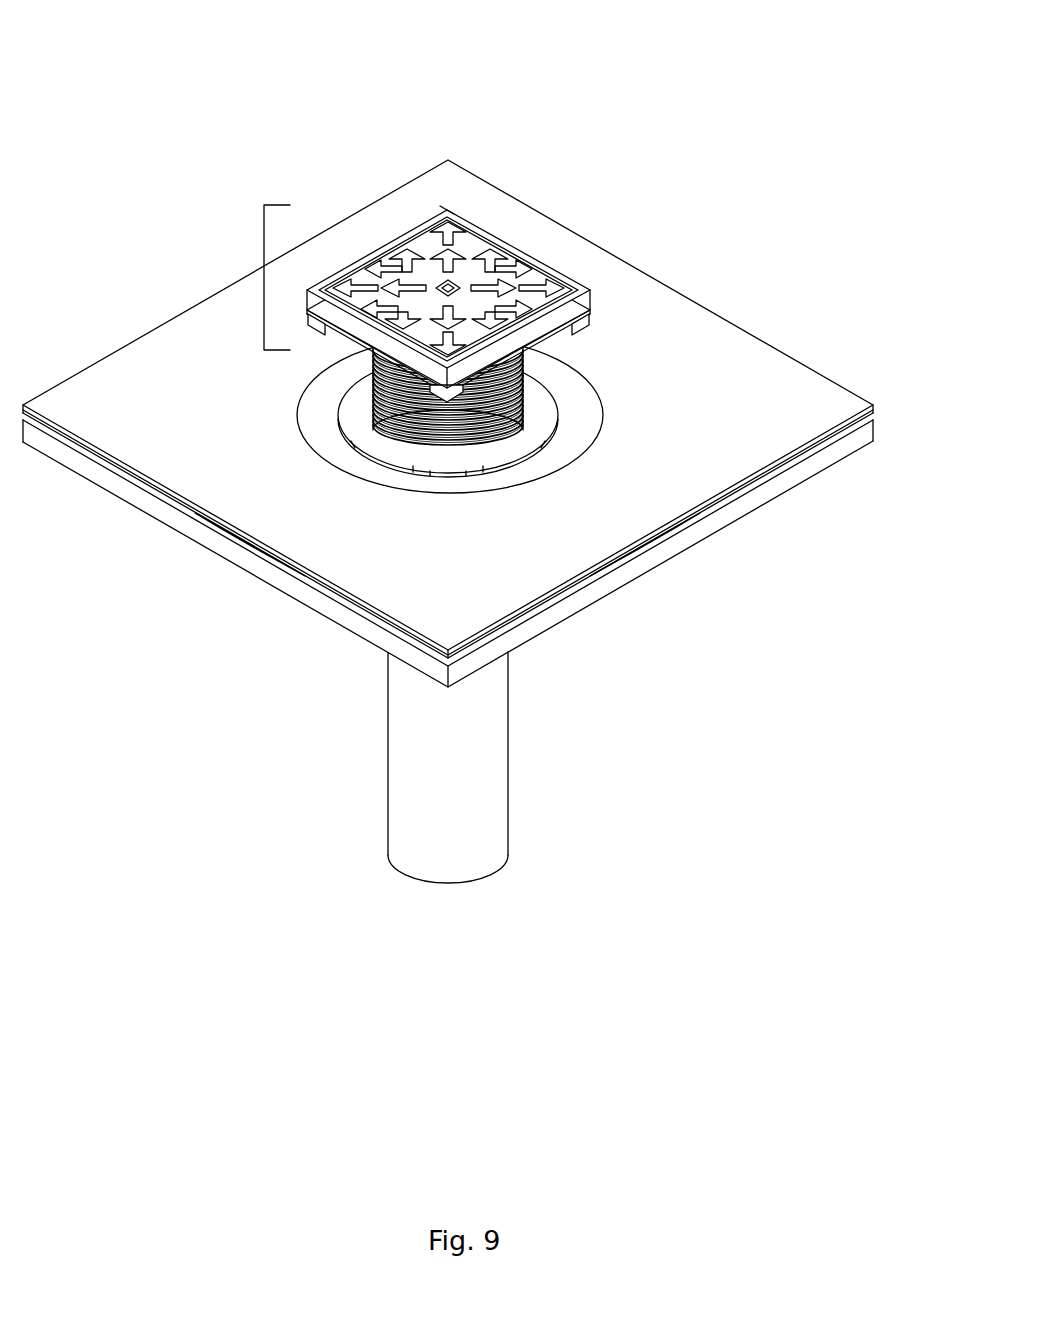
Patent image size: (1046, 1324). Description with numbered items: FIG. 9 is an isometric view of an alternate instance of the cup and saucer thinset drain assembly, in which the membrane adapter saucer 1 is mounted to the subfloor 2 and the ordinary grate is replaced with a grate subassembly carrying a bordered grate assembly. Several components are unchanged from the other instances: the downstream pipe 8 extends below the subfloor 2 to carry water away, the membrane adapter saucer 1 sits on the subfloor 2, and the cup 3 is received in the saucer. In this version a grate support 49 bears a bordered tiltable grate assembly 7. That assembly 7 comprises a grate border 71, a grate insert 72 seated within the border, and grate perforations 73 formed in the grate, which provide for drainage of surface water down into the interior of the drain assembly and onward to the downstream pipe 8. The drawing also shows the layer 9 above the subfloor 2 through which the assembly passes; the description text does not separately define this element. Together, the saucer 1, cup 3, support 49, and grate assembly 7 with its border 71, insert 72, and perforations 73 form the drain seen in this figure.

The membrane adapter saucer 1 is at (568, 437).
The subfloor 2 is at (602, 587).
The cup 3 is at (528, 425).
The bordered tiltable grate assembly 7 is at (263, 282).
The downstream pipe 8 is at (453, 846).
The tile 9 is at (633, 498).
The grate support 49 is at (497, 381).
The grate border 71 is at (487, 230).
The grate insert 72 is at (517, 245).
The grate perforations 73 is at (450, 213).